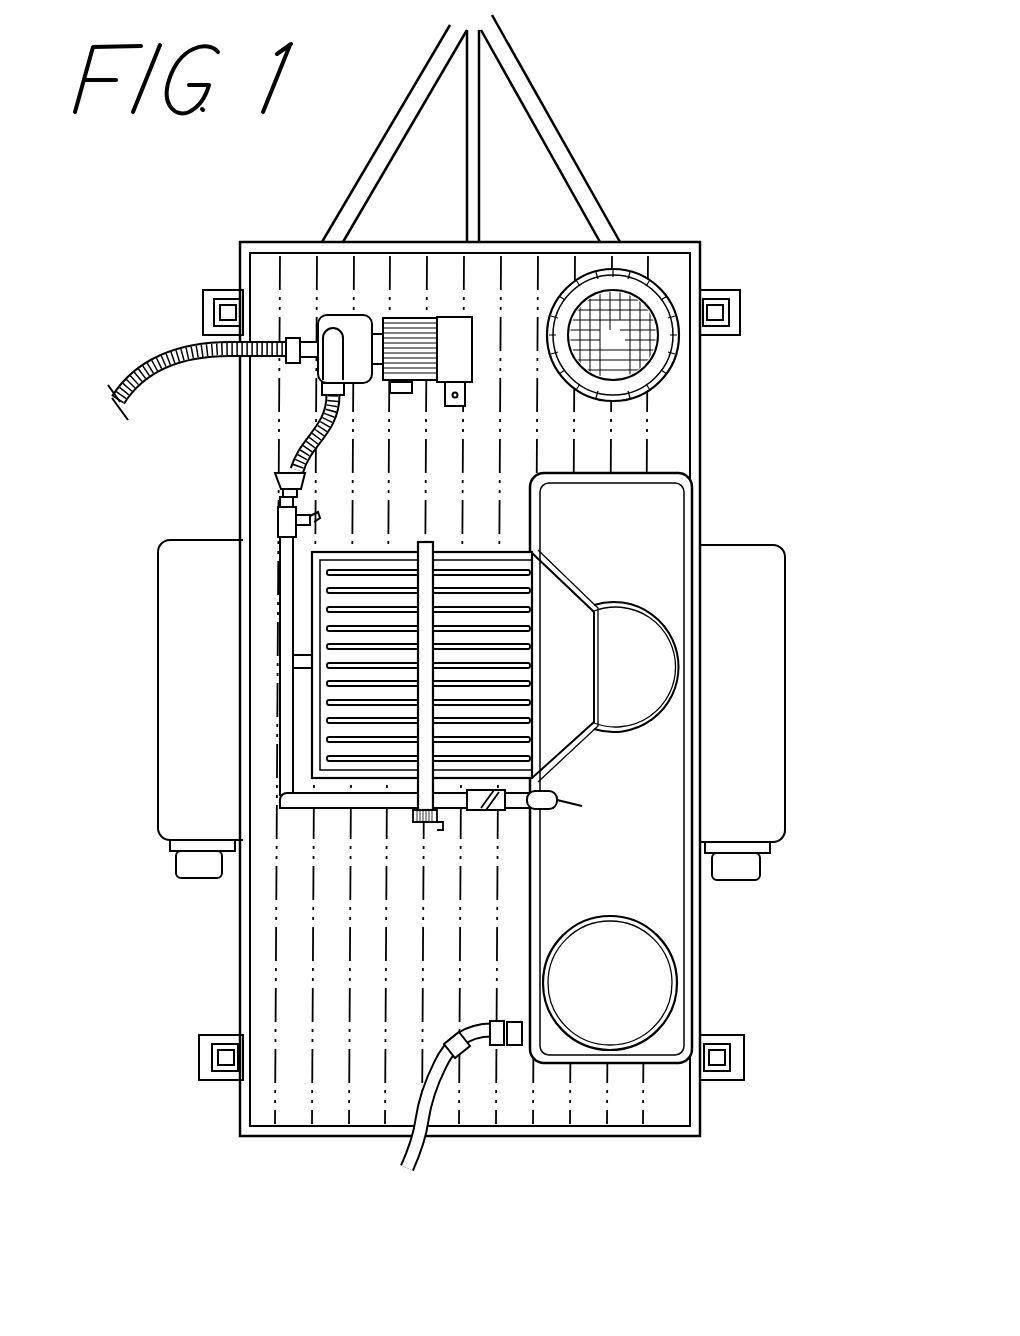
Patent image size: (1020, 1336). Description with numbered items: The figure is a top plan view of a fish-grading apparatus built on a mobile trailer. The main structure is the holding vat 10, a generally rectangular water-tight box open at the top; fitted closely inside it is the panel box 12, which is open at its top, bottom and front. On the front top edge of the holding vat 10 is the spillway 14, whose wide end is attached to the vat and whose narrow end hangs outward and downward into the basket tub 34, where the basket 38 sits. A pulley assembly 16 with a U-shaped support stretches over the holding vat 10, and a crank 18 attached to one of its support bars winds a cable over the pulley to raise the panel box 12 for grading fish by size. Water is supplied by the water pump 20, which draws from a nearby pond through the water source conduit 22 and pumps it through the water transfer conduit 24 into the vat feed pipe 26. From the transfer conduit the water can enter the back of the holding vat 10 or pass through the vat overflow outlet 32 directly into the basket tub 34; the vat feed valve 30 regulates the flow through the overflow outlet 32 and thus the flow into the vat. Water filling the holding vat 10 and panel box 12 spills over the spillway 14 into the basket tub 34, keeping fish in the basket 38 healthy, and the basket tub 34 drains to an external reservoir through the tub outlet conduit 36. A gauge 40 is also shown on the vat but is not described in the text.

The holding vat 10 is at (306, 757).
The panel box 12 is at (318, 690).
The spillway 14 is at (567, 590).
The pulley assembly 16 is at (432, 830).
The crank 18 is at (418, 823).
The water pump 20 is at (336, 316).
The water source conduit 22 is at (155, 372).
The water transfer conduit 24 is at (312, 458).
The vat feed pipe 26 is at (285, 740).
The vat feed valve 30 is at (485, 812).
The vat overflow outlet 32 is at (558, 801).
The basket tub 34 is at (698, 537).
The tub outlet conduit 36 is at (362, 1193).
The basket 38 is at (680, 664).
The pressure gauge 40 is at (640, 242).